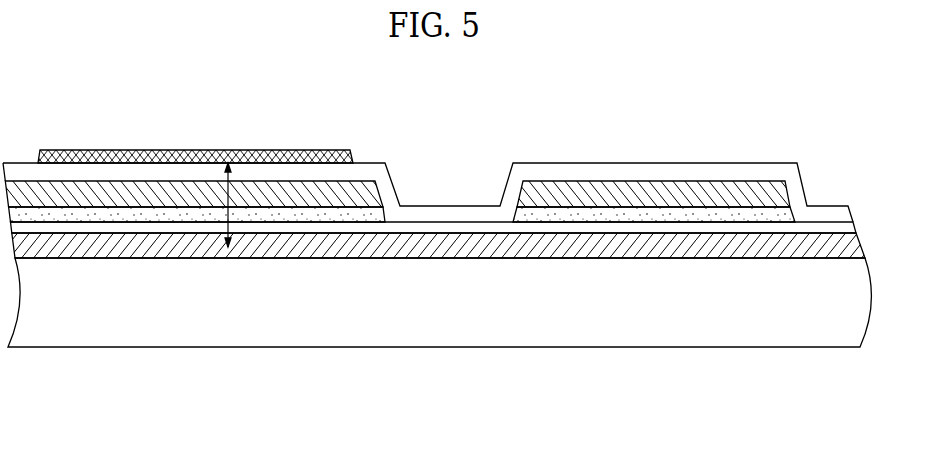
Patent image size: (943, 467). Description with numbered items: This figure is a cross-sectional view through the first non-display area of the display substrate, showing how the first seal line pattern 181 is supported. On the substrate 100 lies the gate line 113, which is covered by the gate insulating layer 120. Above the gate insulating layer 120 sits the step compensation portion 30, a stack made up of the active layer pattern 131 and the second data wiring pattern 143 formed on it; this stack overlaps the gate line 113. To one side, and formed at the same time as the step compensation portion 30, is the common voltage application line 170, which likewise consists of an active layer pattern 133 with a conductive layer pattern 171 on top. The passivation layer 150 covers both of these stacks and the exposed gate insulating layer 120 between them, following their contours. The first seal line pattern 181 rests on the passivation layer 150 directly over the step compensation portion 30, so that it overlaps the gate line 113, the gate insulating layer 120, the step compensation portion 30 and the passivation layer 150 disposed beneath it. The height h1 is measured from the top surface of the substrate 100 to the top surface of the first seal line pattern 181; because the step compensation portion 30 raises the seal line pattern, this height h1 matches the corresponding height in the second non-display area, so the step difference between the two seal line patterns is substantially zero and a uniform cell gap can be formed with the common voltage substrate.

The substrate 100 is at (433, 326).
The gate line 113 is at (565, 240).
The gate insulating layer 120 is at (322, 226).
The active layer pattern 131 is at (60, 220).
The second data wiring pattern 143 is at (133, 208).
The step compensation portion 30 is at (195, 319).
The active layer pattern 133 is at (685, 212).
The conductive layer pattern 171 is at (768, 192).
The common voltage application line 170 is at (654, 319).
The passivation layer 150 is at (612, 168).
The first seal line pattern 181 is at (306, 163).
The height h1 is at (227, 170).